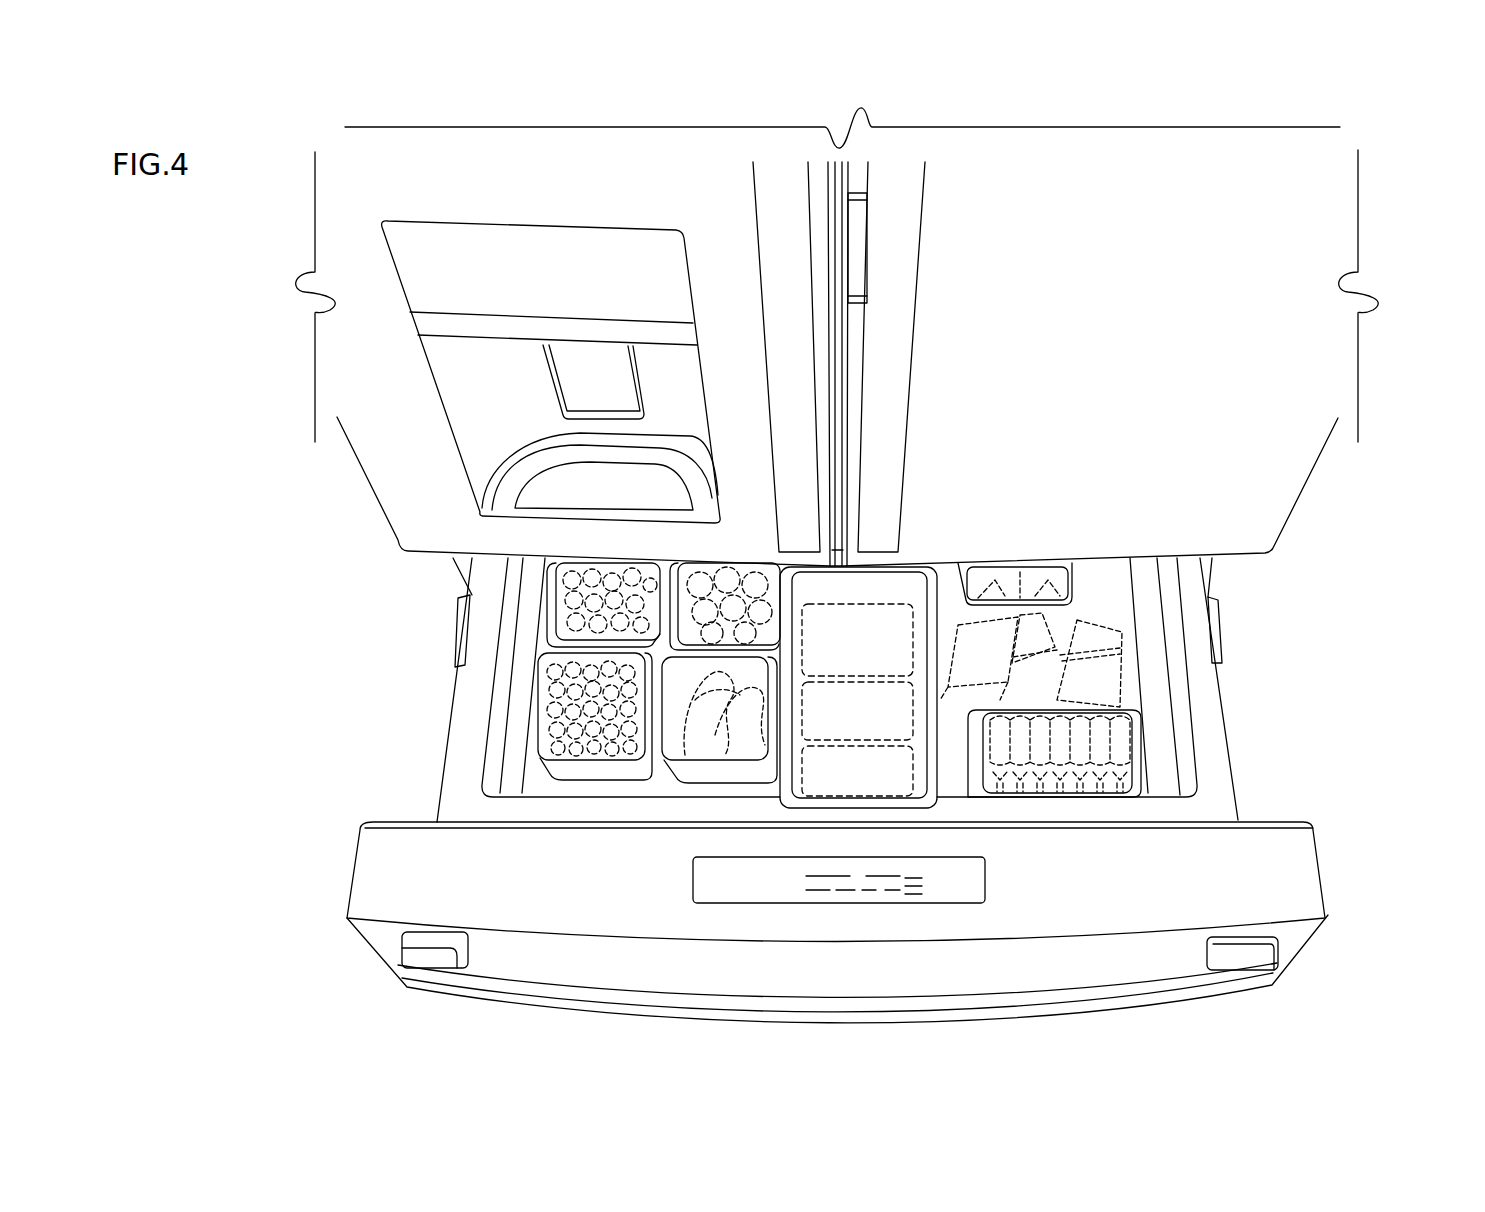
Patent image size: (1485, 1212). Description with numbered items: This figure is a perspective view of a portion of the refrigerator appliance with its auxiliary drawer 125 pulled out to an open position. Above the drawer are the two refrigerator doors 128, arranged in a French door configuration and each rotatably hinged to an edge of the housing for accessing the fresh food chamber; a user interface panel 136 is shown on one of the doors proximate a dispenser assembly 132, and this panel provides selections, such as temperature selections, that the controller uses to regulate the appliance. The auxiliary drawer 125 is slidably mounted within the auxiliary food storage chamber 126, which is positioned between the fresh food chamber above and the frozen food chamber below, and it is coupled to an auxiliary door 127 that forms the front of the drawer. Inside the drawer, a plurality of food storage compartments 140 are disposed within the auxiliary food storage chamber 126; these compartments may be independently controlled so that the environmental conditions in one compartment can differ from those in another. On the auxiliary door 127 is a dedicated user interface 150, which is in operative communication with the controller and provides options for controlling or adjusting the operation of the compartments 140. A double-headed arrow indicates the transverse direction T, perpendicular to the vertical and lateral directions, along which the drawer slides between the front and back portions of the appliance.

The auxiliary drawer 125 is at (1207, 703).
The auxiliary food storage chamber 126 is at (1097, 593).
The auxiliary door 127 is at (1298, 862).
The refrigerator doors 128 is at (606, 198).
The dispenser assembly 132 is at (488, 402).
The user interface panel 136 is at (425, 272).
The food storage compartments 140 is at (885, 597).
The dedicated user interface 150 is at (693, 873).
The transverse direction T is at (337, 608).